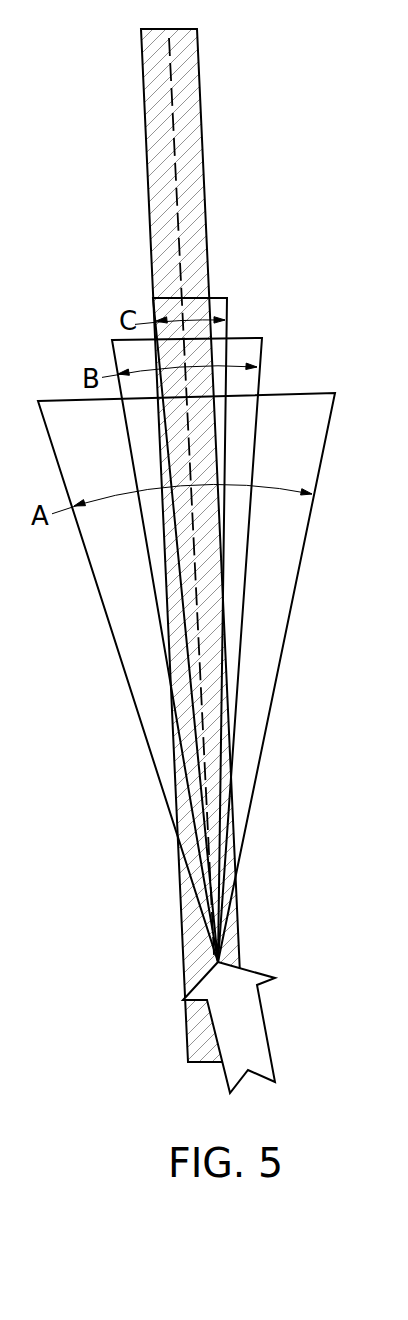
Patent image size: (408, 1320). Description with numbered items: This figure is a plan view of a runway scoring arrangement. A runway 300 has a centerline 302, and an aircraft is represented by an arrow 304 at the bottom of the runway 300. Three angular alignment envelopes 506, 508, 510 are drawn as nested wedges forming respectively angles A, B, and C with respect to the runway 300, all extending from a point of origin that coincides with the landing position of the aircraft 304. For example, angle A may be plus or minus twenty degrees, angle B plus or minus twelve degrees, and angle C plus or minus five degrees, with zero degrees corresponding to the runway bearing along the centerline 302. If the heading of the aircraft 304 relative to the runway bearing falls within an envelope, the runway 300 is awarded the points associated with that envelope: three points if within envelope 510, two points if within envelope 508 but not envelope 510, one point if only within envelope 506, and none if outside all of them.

The runway 300 is at (185, 72).
The centerline 302 is at (173, 123).
The aircraft 304 is at (260, 1050).
The angular alignment envelope 506 is at (308, 404).
The angular alignment envelope 508 is at (255, 347).
The angular alignment envelope 510 is at (217, 296).